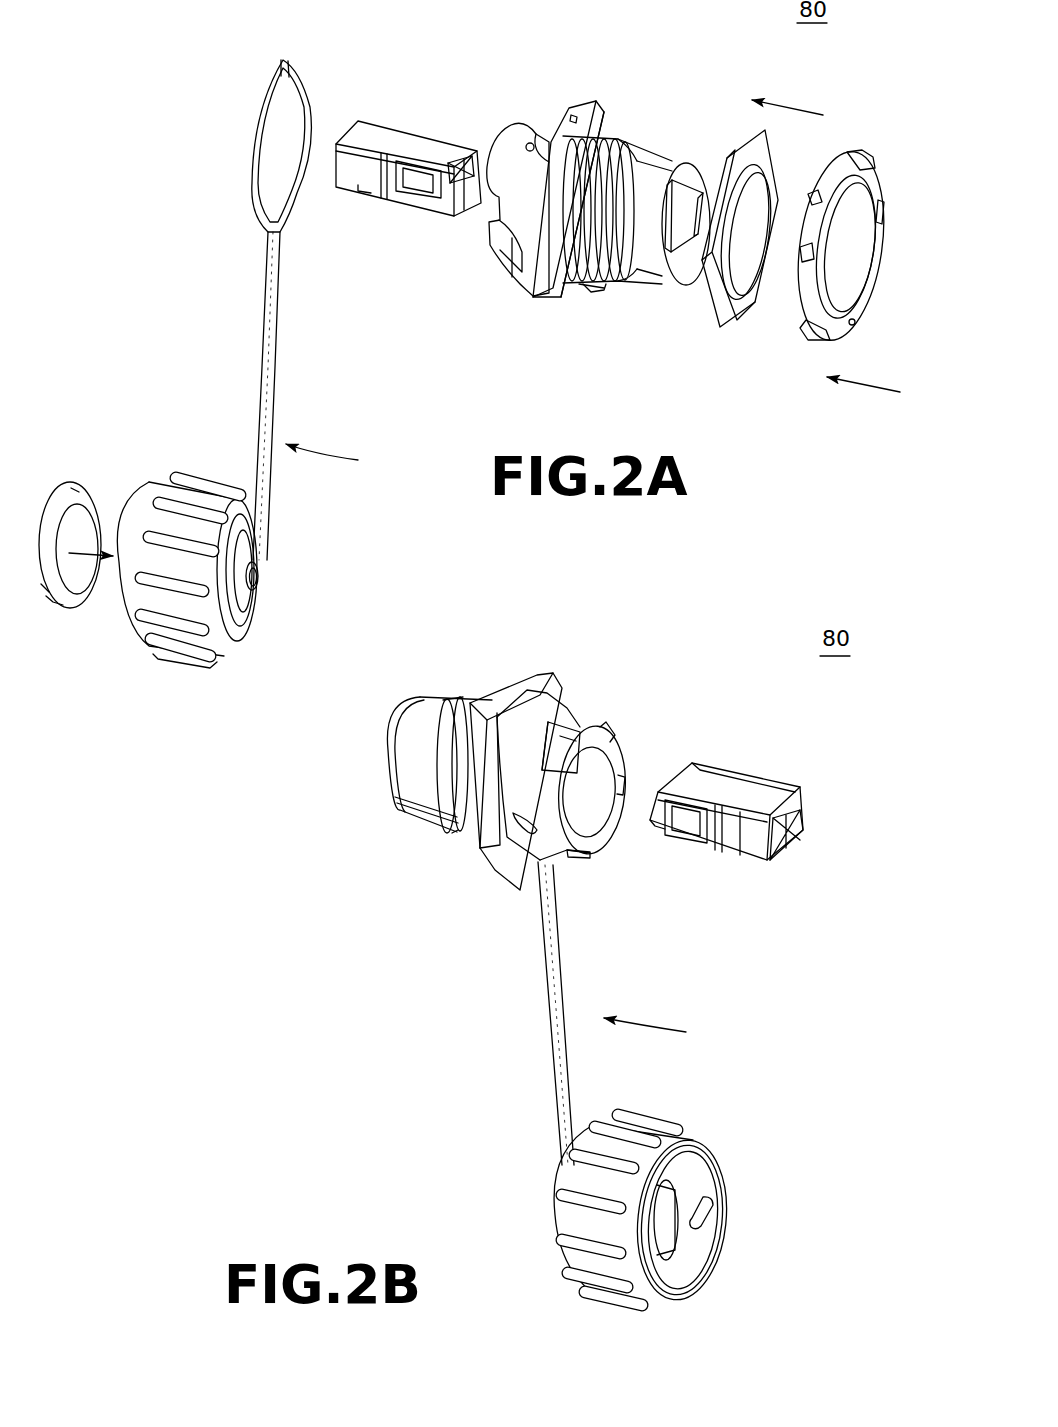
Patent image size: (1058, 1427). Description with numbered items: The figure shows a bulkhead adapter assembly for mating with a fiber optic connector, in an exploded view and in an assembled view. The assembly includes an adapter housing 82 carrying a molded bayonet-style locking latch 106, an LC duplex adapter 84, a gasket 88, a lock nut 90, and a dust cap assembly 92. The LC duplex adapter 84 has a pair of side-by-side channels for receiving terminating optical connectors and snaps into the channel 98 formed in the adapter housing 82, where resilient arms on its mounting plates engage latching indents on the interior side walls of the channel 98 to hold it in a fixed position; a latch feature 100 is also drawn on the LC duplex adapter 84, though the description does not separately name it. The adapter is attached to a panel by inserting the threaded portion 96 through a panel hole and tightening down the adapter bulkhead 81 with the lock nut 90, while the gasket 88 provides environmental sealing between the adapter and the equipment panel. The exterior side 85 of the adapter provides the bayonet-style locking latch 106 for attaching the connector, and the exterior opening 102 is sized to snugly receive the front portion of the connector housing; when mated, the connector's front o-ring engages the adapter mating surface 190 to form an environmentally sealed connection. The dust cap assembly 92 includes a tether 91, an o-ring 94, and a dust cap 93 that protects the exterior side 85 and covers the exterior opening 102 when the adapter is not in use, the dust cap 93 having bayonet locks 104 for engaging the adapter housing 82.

In FIG. 2A, the adapter bulkhead 81 is at (583, 106).
In FIG. 2A, the adapter housing 82 is at (621, 142).
In FIG. 2B, the adapter housing 82 is at (565, 712).
In FIG. 2A, the LC duplex adapter 84 is at (371, 124).
In FIG. 2B, the LC duplex adapter 84 is at (735, 858).
In FIG. 2A, the exterior side 85 is at (532, 100).
In FIG. 2B, the exterior side 85 is at (580, 870).
In FIG. 2A, the gasket 88 is at (723, 302).
In FIG. 2A, the lock nut 90 is at (877, 180).
In FIG. 2A, the tether 91 is at (263, 373).
In FIG. 2B, the tether 91 is at (551, 1022).
In FIG. 2A, the dust cap assembly 92 is at (338, 459).
In FIG. 2B, the dust cap assembly 92 is at (660, 1030).
In FIG. 2A, the dust cap 93 is at (159, 485).
In FIG. 2B, the dust cap 93 is at (692, 1142).
In FIG. 2A, the o-ring 94 is at (53, 502).
In FIG. 2A, the threaded portion 96 is at (582, 283).
In FIG. 2A, the channel 98 is at (694, 189).
In FIG. 2A, the latch 100 is at (472, 159).
In FIG. 2B, the latch 100 is at (801, 822).
In FIG. 2B, the exterior opening 102 is at (594, 814).
In FIG. 2B, the bayonet locks 104 is at (712, 1213).
In FIG. 2A, the bayonet-style locking latch 106 is at (512, 232).
In FIG. 2B, the bayonet-style locking latch 106 is at (557, 728).
In FIG. 2B, the adapter mating surface 190 is at (620, 797).